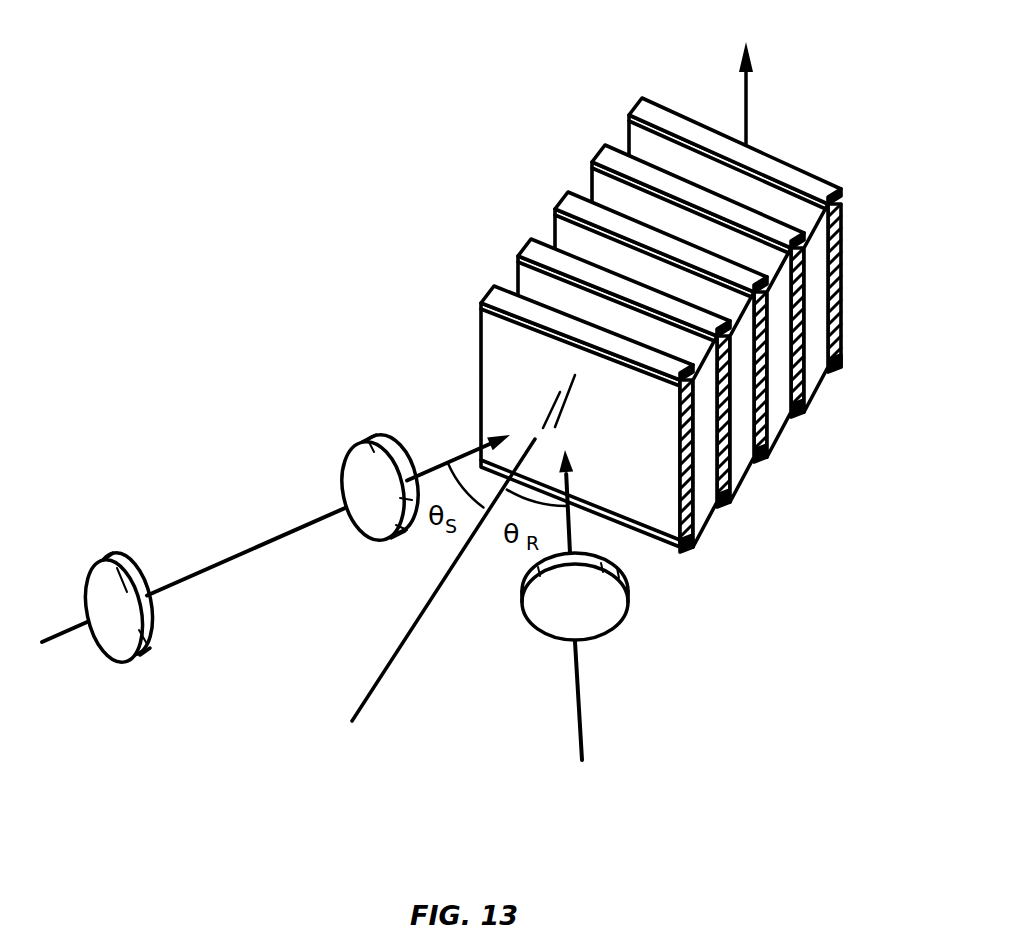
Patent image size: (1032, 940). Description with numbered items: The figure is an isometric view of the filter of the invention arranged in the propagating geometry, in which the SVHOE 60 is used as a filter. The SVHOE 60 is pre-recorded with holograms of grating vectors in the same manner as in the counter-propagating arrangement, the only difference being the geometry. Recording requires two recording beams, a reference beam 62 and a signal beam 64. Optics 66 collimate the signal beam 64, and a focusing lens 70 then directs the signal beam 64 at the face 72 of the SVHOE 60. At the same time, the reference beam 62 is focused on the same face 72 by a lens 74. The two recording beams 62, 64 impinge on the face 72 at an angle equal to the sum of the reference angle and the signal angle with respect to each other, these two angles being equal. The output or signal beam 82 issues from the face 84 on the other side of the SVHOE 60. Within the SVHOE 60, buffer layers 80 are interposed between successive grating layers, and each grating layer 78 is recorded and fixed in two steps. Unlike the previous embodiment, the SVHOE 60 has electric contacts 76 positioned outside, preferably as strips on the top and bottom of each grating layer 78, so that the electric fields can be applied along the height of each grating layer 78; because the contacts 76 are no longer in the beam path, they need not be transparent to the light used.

The SVHOE 60 is at (318, 192).
The reference beam 62 is at (578, 700).
The signal beam 64 is at (67, 635).
The optics 66 is at (100, 560).
The focusing lens 70 is at (355, 443).
The face 72 is at (495, 350).
The lens 74 is at (542, 633).
The electric contacts 76 is at (483, 300).
The grating layer 78 is at (842, 288).
The buffer layers 80 is at (740, 467).
The output or signal beam 82 is at (746, 117).
The face 84 is at (815, 172).